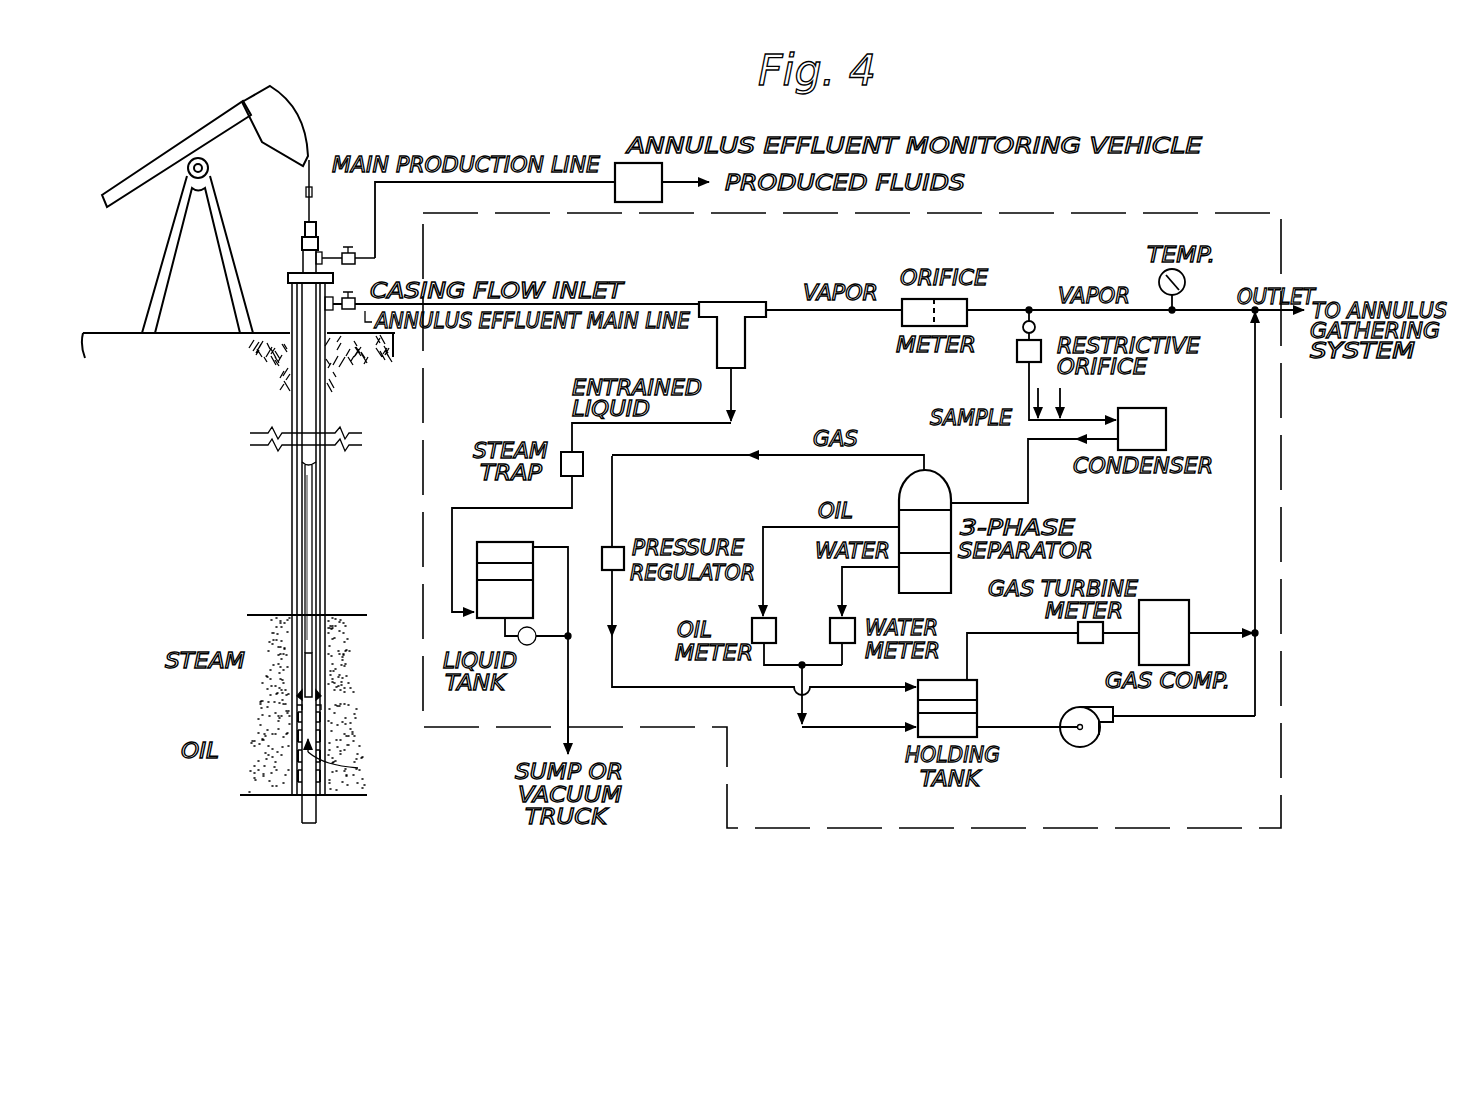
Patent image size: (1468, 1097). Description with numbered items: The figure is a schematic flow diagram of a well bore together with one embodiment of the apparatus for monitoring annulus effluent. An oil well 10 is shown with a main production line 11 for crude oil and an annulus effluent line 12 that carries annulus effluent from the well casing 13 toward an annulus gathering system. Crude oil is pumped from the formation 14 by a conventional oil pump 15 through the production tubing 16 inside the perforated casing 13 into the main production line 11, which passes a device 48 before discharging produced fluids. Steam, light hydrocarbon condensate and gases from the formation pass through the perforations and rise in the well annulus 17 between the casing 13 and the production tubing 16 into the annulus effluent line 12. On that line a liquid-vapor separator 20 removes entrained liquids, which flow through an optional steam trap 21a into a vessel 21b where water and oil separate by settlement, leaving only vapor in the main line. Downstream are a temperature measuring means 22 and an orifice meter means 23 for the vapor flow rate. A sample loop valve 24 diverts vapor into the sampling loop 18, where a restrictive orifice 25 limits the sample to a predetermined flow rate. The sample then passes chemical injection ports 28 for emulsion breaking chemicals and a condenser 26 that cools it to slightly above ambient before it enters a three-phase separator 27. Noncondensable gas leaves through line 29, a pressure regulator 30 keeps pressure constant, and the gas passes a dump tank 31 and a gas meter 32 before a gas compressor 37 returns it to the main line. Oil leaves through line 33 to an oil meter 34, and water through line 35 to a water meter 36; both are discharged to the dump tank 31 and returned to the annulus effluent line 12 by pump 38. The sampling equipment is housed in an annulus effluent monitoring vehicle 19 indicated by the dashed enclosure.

The oil well 10 is at (296, 240).
The main production line 11 is at (333, 247).
The annulus effluent line 12 is at (655, 304).
The well casing 13 is at (291, 298).
The formation 14 is at (293, 717).
The oil pump 15 is at (312, 672).
The production tubing 16 is at (302, 409).
The well annulus 17 is at (298, 497).
The sampling loop 18 is at (1256, 508).
The annulus effluent monitoring vehicle 19 is at (1234, 205).
The liquid-vapor separator 20 is at (728, 302).
The steam trap 21a is at (517, 532).
The vessel 21b is at (525, 606).
The temperature measuring means 22 is at (1158, 280).
The orifice meter means 23 is at (900, 318).
The sample loop valve 24 is at (1036, 326).
The restrictive orifice 25 is at (1017, 358).
The condenser 26 is at (1158, 438).
The three-phase separator 27 is at (940, 543).
The chemical injection ports 28 is at (1042, 396).
The gas line 29 is at (765, 453).
The pressure regulator 30 is at (616, 547).
The dump tank 31 is at (977, 696).
The gas meter 32 is at (1078, 640).
The oil line 33 is at (782, 527).
The oil meter 34 is at (752, 618).
The water line 35 is at (841, 578).
The water meter 36 is at (830, 618).
The gas compressor 37 is at (1178, 641).
The pump 38 is at (1092, 742).
The production line meter 48 is at (628, 188).